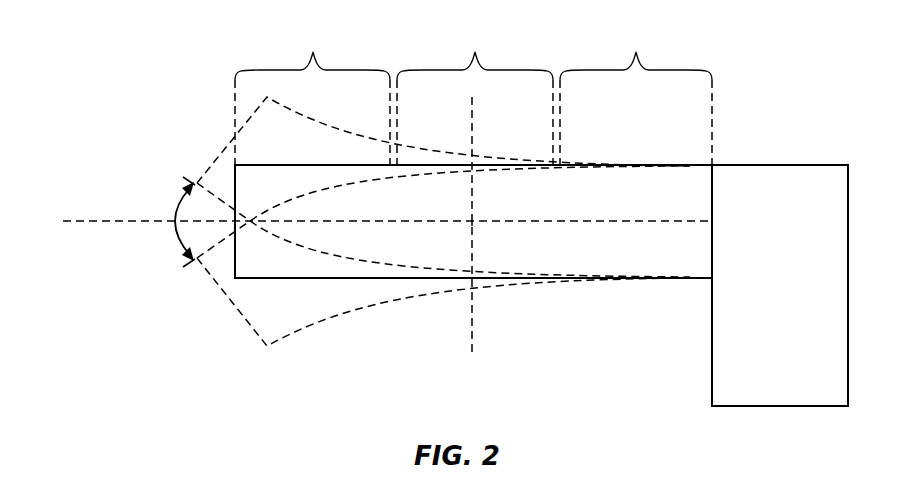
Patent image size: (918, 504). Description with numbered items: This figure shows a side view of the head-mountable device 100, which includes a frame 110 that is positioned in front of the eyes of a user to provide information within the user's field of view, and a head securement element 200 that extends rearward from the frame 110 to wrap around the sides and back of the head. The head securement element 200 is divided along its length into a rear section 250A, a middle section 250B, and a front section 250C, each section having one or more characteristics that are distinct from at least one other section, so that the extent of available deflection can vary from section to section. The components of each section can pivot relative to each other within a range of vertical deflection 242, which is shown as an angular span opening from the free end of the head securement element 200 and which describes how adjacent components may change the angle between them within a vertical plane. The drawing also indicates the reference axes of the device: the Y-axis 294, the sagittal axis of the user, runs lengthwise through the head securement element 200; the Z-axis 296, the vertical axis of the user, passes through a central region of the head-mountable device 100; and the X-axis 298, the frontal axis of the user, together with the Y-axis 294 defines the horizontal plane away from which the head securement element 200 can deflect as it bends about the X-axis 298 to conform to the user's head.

The head-mountable device 100 is at (118, 57).
The frame 110 is at (781, 165).
The head securement element 200 is at (425, 283).
The range of vertical deflection 242 is at (178, 198).
The rear section 250A is at (312, 99).
The middle section 250B is at (475, 99).
The front section 250C is at (636, 99).
The Y-axis 294 is at (80, 223).
The Z-axis 296 is at (472, 318).
The X-axis 298 is at (472, 224).